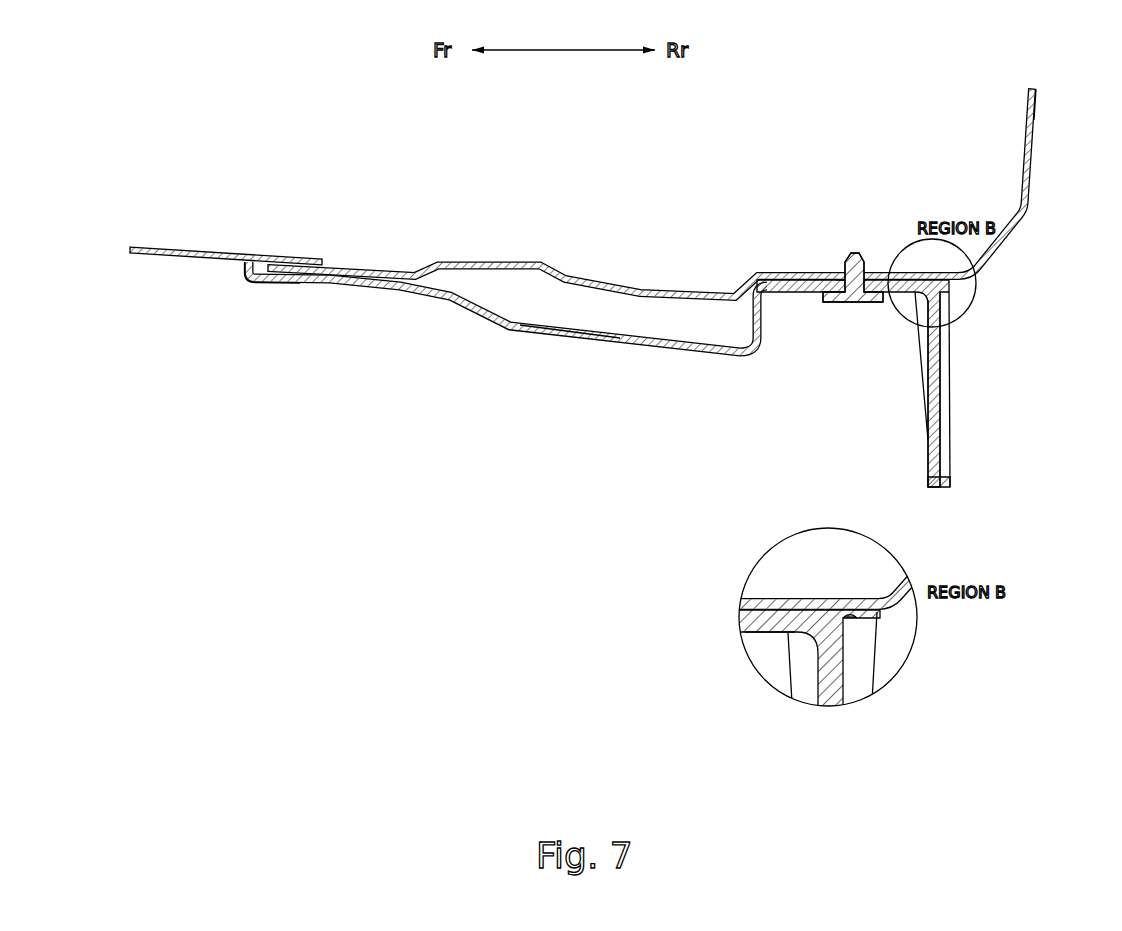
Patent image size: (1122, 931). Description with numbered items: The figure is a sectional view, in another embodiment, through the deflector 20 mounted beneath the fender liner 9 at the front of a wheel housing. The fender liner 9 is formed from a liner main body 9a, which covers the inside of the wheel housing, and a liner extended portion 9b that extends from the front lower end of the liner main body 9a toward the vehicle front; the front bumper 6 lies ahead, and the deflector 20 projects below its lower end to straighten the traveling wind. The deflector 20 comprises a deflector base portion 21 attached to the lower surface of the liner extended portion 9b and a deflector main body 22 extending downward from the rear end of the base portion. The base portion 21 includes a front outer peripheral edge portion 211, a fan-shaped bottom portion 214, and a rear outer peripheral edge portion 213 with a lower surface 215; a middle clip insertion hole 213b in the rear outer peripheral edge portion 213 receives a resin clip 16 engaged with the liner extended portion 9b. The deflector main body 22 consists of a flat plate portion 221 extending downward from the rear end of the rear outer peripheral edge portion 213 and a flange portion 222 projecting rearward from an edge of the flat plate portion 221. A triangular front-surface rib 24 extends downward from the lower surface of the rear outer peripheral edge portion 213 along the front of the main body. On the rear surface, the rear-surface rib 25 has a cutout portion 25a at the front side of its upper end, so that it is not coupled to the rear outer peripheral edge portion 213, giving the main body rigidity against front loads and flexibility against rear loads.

The front bumper 6 is at (150, 244).
The fender liner 9 is at (1026, 108).
The liner main body 9a is at (1037, 126).
The liner extended portion 9b is at (644, 290).
The resin clip 16 is at (836, 304).
The deflector 20 is at (706, 356).
The deflector base portion 21 is at (602, 394).
The front outer peripheral edge portion 211 is at (296, 288).
The rear outer peripheral edge portion 213 is at (910, 297).
The middle clip insertion hole 213b is at (840, 274).
The fan-shaped bottom portion 214 is at (606, 354).
The lower surface of attachment portion 215 is at (762, 636).
The deflector main body 22 is at (901, 523).
The flat plate portion 221 is at (938, 402).
The flange portion 222 is at (936, 488).
The front-surface rib 24 is at (925, 330).
The rear-surface rib 25 is at (949, 304).
The cutout portion 25a is at (858, 622).